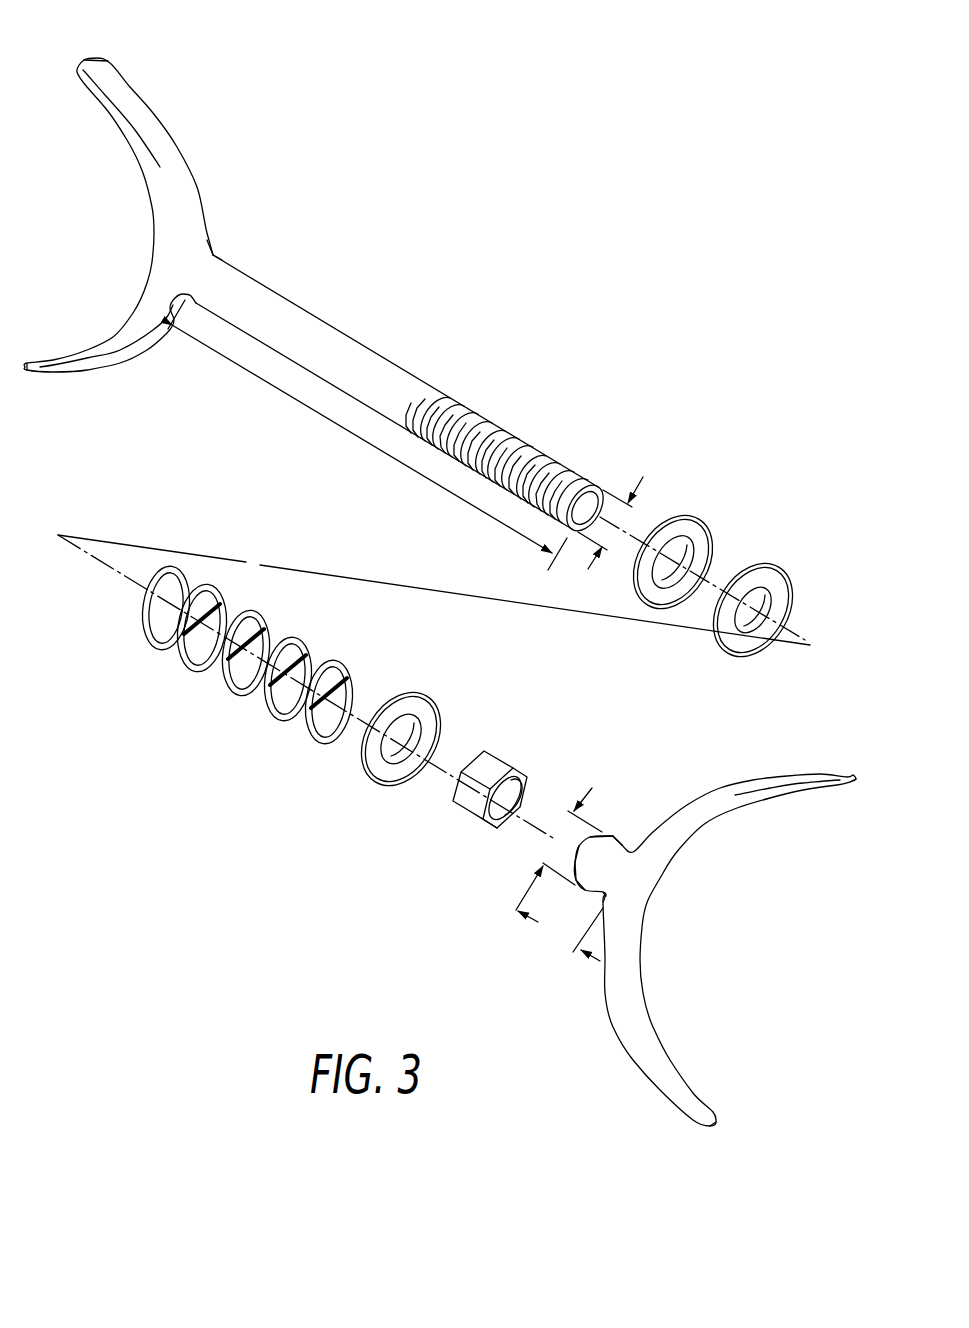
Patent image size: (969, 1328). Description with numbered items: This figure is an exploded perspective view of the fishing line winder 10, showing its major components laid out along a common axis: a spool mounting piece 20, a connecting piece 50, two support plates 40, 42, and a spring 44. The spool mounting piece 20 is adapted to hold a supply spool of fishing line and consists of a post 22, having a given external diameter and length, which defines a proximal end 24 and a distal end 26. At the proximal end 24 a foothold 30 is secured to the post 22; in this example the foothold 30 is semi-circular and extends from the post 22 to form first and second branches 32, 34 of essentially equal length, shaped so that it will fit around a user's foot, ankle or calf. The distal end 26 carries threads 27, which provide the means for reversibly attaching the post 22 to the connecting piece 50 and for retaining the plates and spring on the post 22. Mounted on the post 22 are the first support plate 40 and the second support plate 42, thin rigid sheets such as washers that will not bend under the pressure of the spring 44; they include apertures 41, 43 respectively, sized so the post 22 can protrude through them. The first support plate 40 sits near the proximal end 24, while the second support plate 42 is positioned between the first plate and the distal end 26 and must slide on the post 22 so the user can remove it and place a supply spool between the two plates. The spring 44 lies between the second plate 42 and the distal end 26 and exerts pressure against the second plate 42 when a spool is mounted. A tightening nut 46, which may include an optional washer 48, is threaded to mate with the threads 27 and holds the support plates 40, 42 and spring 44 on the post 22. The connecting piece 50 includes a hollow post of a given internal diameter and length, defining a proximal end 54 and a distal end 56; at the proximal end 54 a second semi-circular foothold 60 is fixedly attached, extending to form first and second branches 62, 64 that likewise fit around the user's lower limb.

The line winder 10 is at (544, 283).
The spool mounting piece 20 is at (374, 332).
The post 22 is at (380, 377).
The proximal end 24 is at (218, 258).
The distal end 26 is at (597, 485).
The threads 27 is at (497, 437).
The foothold 30 is at (173, 157).
The first branch 32 is at (93, 60).
The second branch 34 is at (41, 372).
The first support plate 40 is at (706, 525).
The aperture 41 is at (641, 586).
The second support plate 42 is at (784, 570).
The aperture 43 is at (727, 645).
The spring 44 is at (262, 620).
The tightening nut 46 is at (490, 772).
The washer 48 is at (397, 693).
The connecting piece 50 is at (600, 1033).
The proximal end 54 is at (633, 850).
The distal end 56 is at (577, 858).
The foothold 60 is at (687, 838).
The first branch 62 is at (854, 778).
The second branch 64 is at (714, 1124).